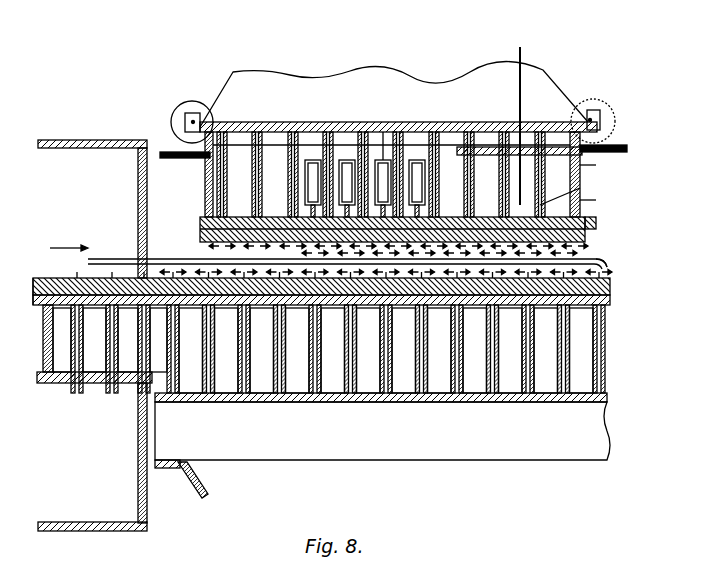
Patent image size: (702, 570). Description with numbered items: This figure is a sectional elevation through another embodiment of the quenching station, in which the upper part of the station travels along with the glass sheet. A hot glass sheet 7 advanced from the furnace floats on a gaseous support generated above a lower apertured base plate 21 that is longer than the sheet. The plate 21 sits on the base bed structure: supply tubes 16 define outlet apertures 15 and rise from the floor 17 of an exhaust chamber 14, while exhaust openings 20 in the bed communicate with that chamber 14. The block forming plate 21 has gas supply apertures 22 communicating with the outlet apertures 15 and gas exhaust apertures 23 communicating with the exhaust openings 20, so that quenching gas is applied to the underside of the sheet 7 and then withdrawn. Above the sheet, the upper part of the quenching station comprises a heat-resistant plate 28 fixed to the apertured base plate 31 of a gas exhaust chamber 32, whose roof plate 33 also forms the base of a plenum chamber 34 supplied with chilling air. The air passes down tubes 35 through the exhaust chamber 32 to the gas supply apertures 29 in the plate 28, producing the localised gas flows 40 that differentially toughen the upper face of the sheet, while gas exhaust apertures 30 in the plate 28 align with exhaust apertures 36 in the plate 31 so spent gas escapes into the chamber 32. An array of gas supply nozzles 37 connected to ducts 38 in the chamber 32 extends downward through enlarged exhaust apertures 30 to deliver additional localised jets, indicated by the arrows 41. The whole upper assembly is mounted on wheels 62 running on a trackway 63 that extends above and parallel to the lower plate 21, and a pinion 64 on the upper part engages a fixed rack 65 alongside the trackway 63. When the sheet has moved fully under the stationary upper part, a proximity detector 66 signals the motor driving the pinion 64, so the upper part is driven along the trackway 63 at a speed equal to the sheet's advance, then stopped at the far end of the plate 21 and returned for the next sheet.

The glass sheet 7 is at (156, 262).
The exhaust chamber 14 is at (63, 362).
The outlet apertures 15 is at (55, 290).
The supply tubes 16 is at (45, 364).
The floor of the exhaust chamber 17 is at (95, 376).
The exhaust openings 20 is at (47, 360).
The apertured base plate 21 is at (36, 294).
The gas supply apertures 22 is at (108, 283).
The gas exhaust apertures 23 is at (48, 327).
The plate 28 is at (208, 232).
The gas supply apertures 29 is at (486, 212).
The gas exhaust apertures 30 is at (449, 212).
The apertured base plate 31 is at (598, 224).
The gas exhaust chamber 32 is at (560, 165).
The plate 33 is at (383, 128).
The plenum chamber 34 is at (440, 72).
The tubes 35 is at (598, 172).
The exhaust apertures 36 is at (598, 200).
The gas supply nozzles 37 is at (284, 170).
The ducts 38 is at (347, 160).
The localised gas flows 40 is at (606, 260).
The arrows 41 is at (442, 304).
The wheels 62 is at (195, 101).
The trackway 63 is at (168, 151).
The pinion 64 is at (600, 108).
The rack 65 is at (622, 145).
The proximity detector 66 is at (580, 186).